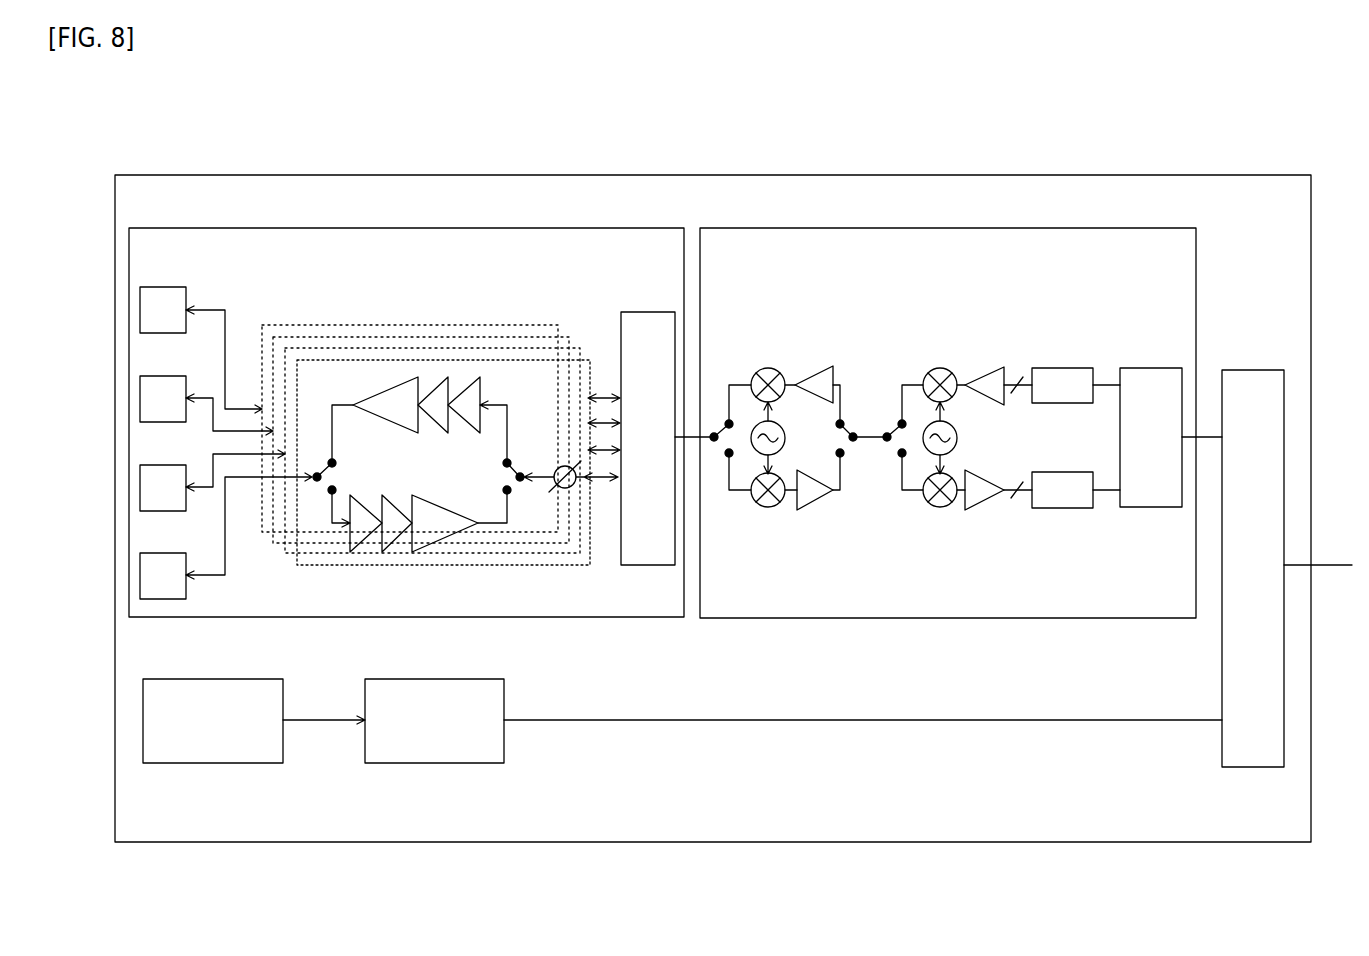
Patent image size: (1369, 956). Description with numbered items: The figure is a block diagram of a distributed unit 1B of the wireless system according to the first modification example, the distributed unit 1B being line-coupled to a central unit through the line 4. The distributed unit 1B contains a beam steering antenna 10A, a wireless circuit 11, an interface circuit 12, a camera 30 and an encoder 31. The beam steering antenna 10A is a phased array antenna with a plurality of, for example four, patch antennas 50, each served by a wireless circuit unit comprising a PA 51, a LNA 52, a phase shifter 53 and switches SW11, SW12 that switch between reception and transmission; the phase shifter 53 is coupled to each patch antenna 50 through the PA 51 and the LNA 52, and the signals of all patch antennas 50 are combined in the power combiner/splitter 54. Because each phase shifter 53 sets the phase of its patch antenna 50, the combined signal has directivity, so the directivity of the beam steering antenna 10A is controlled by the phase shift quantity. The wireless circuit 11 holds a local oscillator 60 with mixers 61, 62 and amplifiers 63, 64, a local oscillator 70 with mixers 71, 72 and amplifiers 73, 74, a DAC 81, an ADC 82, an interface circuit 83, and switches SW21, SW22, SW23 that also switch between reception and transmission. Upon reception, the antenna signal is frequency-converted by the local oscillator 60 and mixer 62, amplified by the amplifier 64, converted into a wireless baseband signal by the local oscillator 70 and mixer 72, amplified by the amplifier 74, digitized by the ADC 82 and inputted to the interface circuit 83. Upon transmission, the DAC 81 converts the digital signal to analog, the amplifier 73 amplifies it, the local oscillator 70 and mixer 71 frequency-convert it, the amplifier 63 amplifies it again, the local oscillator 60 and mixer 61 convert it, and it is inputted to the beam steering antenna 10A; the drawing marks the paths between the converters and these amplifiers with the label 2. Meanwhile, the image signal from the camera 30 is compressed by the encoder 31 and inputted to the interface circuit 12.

The distributed unit 1B is at (272, 175).
The beam steering antenna 10A is at (413, 228).
The wireless circuit 11 is at (945, 228).
The interface circuit 12 is at (1248, 370).
The line 4 is at (1333, 565).
The patch antenna 50 is at (140, 315).
The PA (power amplifier) 51 is at (390, 382).
The LNA (low noise amplifier) 52 is at (440, 540).
The phase shifter 53 is at (565, 466).
The power combiner/splitter 54 is at (648, 312).
The switch SW11 is at (324, 504).
The switch SW12 is at (528, 498).
The switch SW21 is at (722, 411).
The switch SW22 is at (862, 464).
The switch SW23 is at (887, 409).
The local oscillator 60 is at (786, 437).
The mixer 61 is at (768, 366).
The mixer 62 is at (768, 509).
The amplifier 63 is at (812, 370).
The amplifier 64 is at (812, 505).
The local oscillator 70 is at (958, 437).
The mixer 71 is at (940, 366).
The mixer 72 is at (940, 509).
The amplifier 73 is at (985, 370).
The amplifier 74 is at (985, 505).
The DAC (digital-to-analog converter) 81 is at (1065, 368).
The ADC (analog-to-digital converter) 82 is at (1065, 508).
The interface circuit 83 is at (1150, 368).
The signal bus (2 lines) 2 is at (1017, 424).
The camera 30 is at (260, 676).
The encoder 31 is at (480, 676).